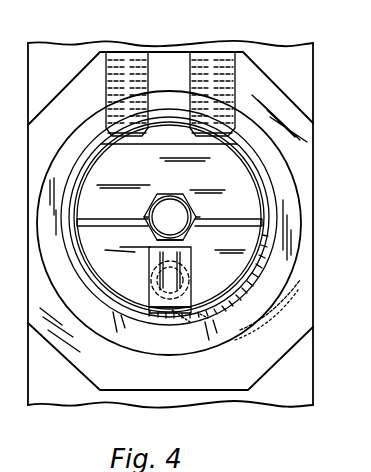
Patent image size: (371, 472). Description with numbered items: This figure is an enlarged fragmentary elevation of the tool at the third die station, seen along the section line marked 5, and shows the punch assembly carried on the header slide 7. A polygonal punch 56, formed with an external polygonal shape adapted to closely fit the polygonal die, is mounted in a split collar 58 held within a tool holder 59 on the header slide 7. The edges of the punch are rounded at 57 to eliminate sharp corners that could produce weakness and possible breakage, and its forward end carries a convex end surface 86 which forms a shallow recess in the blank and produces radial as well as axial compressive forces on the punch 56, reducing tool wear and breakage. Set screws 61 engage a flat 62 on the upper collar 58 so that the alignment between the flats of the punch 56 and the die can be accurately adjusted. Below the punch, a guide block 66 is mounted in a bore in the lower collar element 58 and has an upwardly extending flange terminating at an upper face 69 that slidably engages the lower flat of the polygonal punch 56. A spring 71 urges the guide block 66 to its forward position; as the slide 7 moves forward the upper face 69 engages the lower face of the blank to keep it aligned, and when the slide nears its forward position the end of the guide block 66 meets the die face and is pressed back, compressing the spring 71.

The header slide 7 is at (305, 375).
The tool holder 59 is at (298, 330).
The flat 62 is at (148, 145).
The spring 71 is at (160, 300).
The set screws 61 is at (106, 80).
The split collar 58 is at (122, 262).
The polygonal punch 56 is at (205, 212).
The rounded edges 57 is at (148, 207).
The convex end surface 86 is at (196, 207).
The upper face 69 is at (186, 243).
The guide block 66 is at (193, 288).
The section line 5- 5 is at (148, 427).